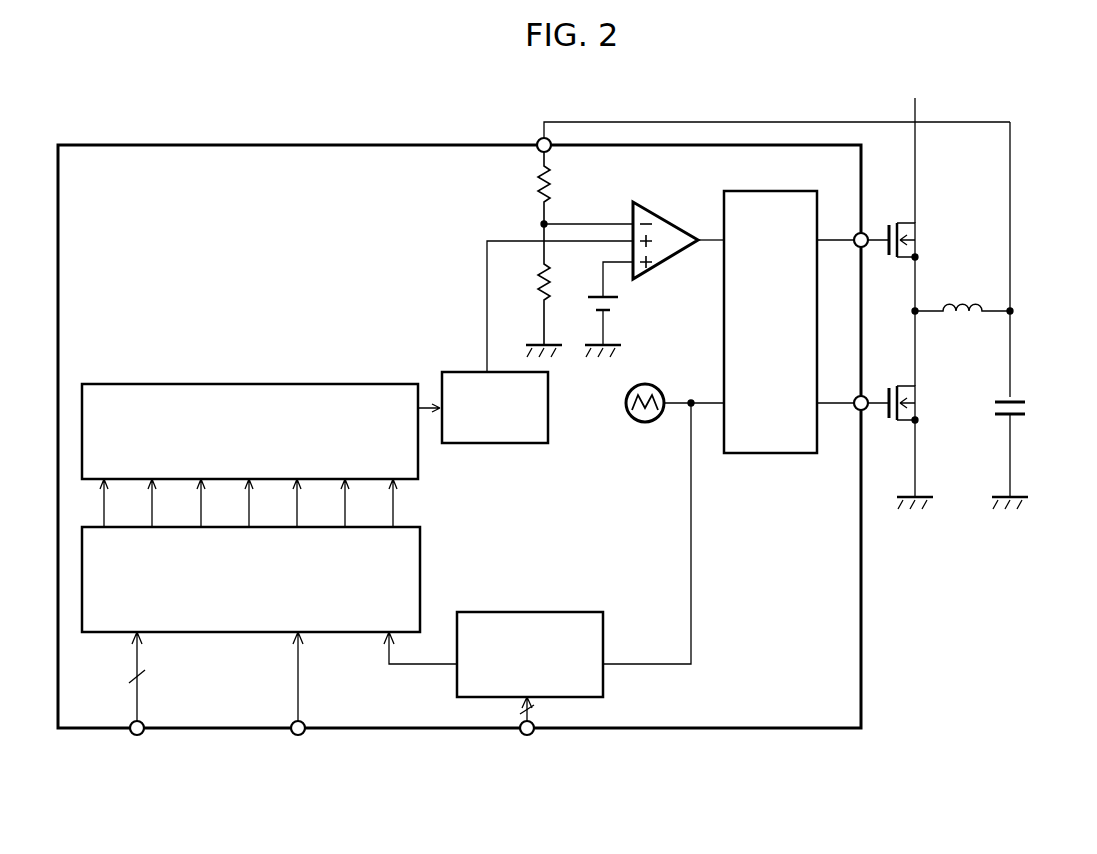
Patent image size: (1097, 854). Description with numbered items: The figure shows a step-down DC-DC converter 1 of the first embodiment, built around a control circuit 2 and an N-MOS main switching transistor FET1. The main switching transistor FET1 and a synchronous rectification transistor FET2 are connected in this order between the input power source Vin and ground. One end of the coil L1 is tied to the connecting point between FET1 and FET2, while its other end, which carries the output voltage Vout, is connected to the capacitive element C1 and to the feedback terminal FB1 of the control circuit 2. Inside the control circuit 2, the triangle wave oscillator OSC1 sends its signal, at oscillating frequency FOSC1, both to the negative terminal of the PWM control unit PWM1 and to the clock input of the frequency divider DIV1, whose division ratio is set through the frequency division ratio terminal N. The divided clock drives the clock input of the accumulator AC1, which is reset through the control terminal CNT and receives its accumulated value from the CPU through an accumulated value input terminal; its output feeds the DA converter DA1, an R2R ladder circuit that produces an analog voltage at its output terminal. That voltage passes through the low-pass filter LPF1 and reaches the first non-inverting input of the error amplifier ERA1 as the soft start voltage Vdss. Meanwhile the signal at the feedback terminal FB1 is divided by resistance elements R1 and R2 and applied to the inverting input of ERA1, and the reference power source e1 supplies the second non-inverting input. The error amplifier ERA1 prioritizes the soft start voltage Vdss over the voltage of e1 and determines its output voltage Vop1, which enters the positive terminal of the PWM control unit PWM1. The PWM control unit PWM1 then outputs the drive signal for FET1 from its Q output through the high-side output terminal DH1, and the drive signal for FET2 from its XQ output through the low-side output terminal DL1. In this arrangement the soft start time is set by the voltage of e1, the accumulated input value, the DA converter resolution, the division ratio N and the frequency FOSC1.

The DC-DC converter 1 is at (355, 110).
The control circuit 2 is at (185, 144).
The feedback terminal FB1 is at (538, 141).
The resistance element R1 is at (526, 189).
The resistance element R2 is at (532, 290).
The soft start voltage Vdss is at (487, 284).
The error amplifier ERA1 is at (660, 212).
The reference power source e1 is at (614, 309).
The output voltage Vop1 is at (708, 236).
The PWM control unit PWM1 is at (768, 191).
The high-side output terminal DH1 is at (866, 234).
The low-side output terminal DL1 is at (866, 397).
The main switching transistor FET1 is at (927, 241).
The synchronous rectification transistor FET2 is at (927, 447).
The input power source Vin is at (912, 149).
The coil L1 is at (962, 321).
The output voltage Vout is at (1010, 266).
The capacitive element C1 is at (1024, 454).
The DA converter DA1 is at (155, 383).
The low-pass filter LPF1 is at (497, 444).
The accumulator AC1 is at (420, 565).
The control terminal CNT is at (301, 735).
The frequency divider DIV1 is at (569, 611).
The frequency division ratio terminal N is at (531, 735).
The triangle wave oscillator OSC1 is at (648, 424).
The oscillating frequency FOSC1 is at (646, 662).